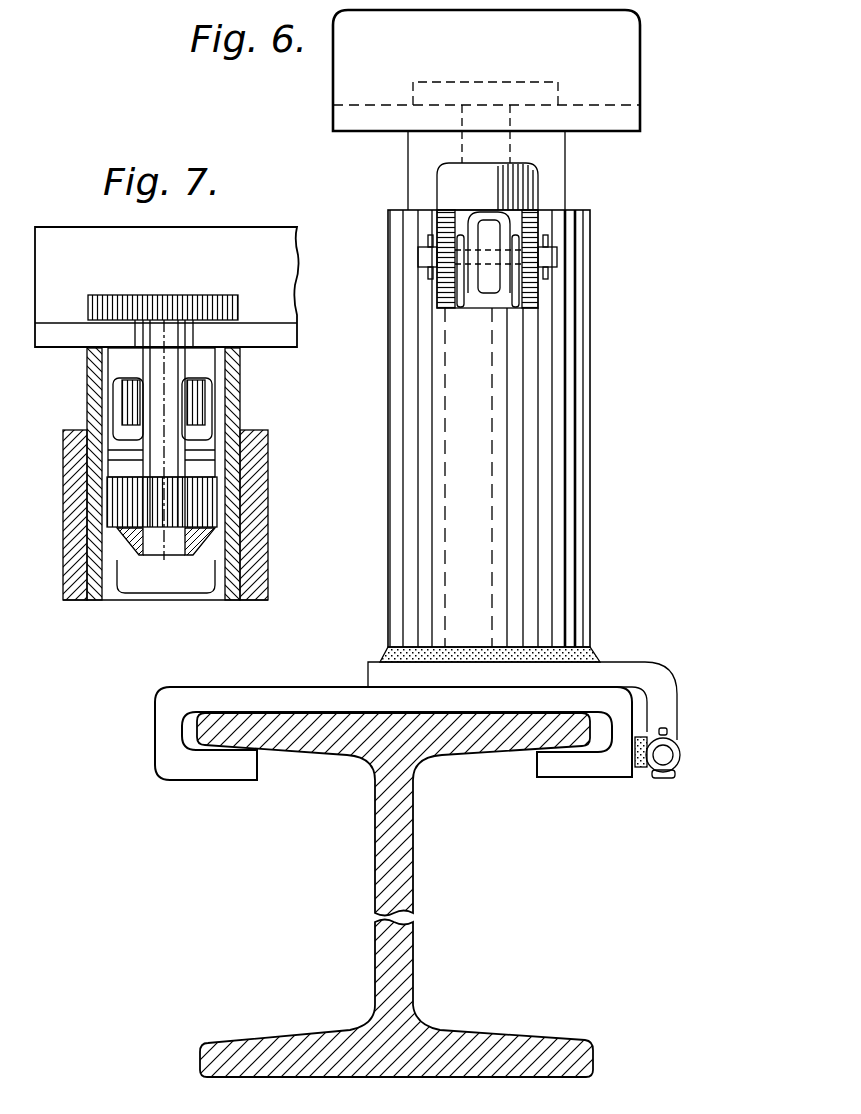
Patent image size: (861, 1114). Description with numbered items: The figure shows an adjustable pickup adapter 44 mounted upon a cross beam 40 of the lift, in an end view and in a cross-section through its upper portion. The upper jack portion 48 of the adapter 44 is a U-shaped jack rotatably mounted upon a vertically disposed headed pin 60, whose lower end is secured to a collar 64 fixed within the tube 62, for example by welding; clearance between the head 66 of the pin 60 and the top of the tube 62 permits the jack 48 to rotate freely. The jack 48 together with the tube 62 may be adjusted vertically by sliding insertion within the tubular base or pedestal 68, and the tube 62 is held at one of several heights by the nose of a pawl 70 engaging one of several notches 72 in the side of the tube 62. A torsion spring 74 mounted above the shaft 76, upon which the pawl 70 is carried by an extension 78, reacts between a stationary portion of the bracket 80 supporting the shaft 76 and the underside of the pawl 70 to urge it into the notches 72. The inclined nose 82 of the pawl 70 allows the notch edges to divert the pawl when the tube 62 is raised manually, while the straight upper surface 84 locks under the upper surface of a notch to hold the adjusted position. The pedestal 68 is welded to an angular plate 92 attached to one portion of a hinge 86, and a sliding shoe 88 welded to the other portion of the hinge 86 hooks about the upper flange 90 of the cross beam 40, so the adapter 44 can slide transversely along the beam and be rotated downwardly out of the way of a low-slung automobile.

In FIG. 6, the rear cross beam 40 is at (410, 955).
In FIG. 6, the adjustable pickup adapter 44 is at (598, 324).
In FIG. 7, the adjustable pickup adapter 44 is at (65, 533).
In FIG. 6, the jack 48 is at (618, 85).
In FIG. 7, the jack 48 is at (277, 343).
In FIG. 7, the headed pin 60 is at (150, 467).
In FIG. 6, the tube 62 is at (552, 172).
In FIG. 7, the tube 62 is at (94, 388).
In FIG. 7, the collar 64 is at (125, 540).
In FIG. 6, the head 66 is at (503, 82).
In FIG. 7, the head 66 is at (188, 295).
In FIG. 6, the pedestal 68 is at (562, 570).
In FIG. 7, the pedestal 68 is at (255, 530).
In FIG. 6, the pawl 70 is at (447, 191).
In FIG. 7, the pawl 70 is at (205, 405).
In FIG. 7, the notches 72 is at (200, 462).
In FIG. 6, the torsion spring 74 is at (514, 233).
In FIG. 6, the shaft 76 is at (418, 257).
In FIG. 6, the extension 78 is at (490, 228).
In FIG. 6, the bracket 80 is at (437, 290).
In FIG. 7, the inclined nose 82 is at (128, 400).
In FIG. 6, the straight upper surface 84 is at (458, 162).
In FIG. 6, the hinge 86 is at (700, 730).
In FIG. 6, the shoe 88 is at (165, 727).
In FIG. 6, the upper flange 90 is at (473, 745).
In FIG. 6, the angular plate 92 is at (628, 668).